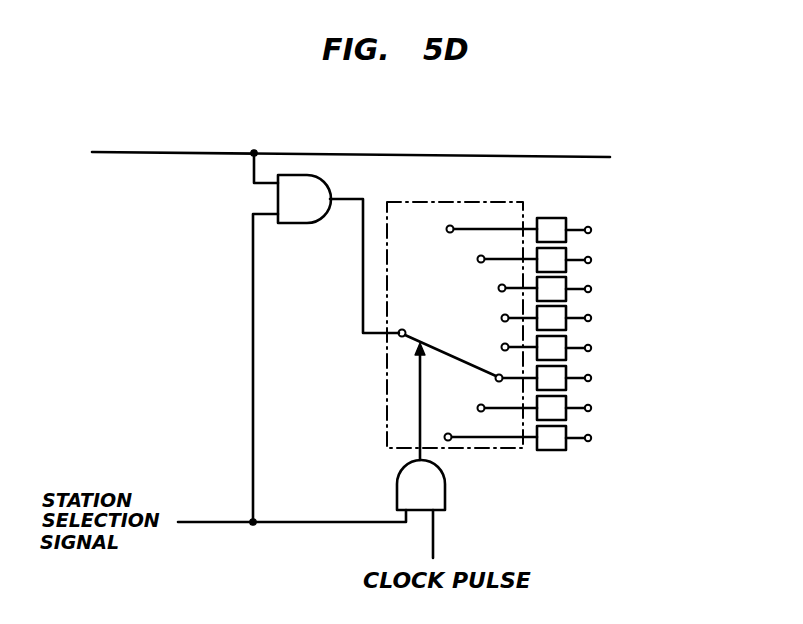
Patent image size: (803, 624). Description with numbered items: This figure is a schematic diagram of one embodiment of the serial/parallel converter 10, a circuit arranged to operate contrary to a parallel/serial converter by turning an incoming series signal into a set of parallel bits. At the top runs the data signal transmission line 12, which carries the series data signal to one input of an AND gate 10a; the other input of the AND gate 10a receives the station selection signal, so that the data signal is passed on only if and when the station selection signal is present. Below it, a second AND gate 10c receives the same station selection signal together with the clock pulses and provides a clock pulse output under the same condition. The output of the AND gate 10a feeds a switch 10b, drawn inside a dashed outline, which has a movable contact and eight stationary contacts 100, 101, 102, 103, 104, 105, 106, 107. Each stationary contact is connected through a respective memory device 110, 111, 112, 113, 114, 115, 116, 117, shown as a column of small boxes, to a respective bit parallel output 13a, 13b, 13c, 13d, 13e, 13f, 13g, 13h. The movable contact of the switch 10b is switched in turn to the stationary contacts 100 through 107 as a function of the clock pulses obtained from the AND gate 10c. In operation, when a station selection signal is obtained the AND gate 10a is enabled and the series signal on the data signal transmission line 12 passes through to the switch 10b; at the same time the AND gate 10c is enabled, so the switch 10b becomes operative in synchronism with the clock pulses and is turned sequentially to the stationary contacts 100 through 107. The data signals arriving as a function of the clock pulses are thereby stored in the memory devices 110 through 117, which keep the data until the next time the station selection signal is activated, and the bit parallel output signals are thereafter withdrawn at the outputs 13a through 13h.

The serial/parallel converter 10 is at (165, 395).
The AND gate 10a is at (299, 224).
The switch 10b is at (483, 451).
The AND gate 10c is at (397, 490).
The data signal transmission line 12 is at (414, 155).
The stationary contact 100 is at (447, 226).
The stationary contact 101 is at (478, 257).
The stationary contact 102 is at (499, 286).
The stationary contact 103 is at (502, 316).
The stationary contact 104 is at (502, 345).
The stationary contact 105 is at (495, 374).
The stationary contact 106 is at (478, 405).
The stationary contact 107 is at (446, 434).
The memory device 110 is at (553, 217).
The memory device 111 is at (562, 247).
The memory device 112 is at (562, 276).
The memory device 113 is at (562, 305).
The memory device 114 is at (562, 336).
The memory device 115 is at (562, 366).
The memory device 116 is at (562, 396).
The memory device 117 is at (555, 452).
The bit parallel output 13a is at (592, 230).
The bit parallel output 13b is at (592, 260).
The bit parallel output 13c is at (592, 289).
The bit parallel output 13d is at (592, 318).
The bit parallel output 13e is at (592, 348).
The bit parallel output 13f is at (592, 378).
The bit parallel output 13g is at (592, 408).
The bit parallel output 13h is at (592, 438).